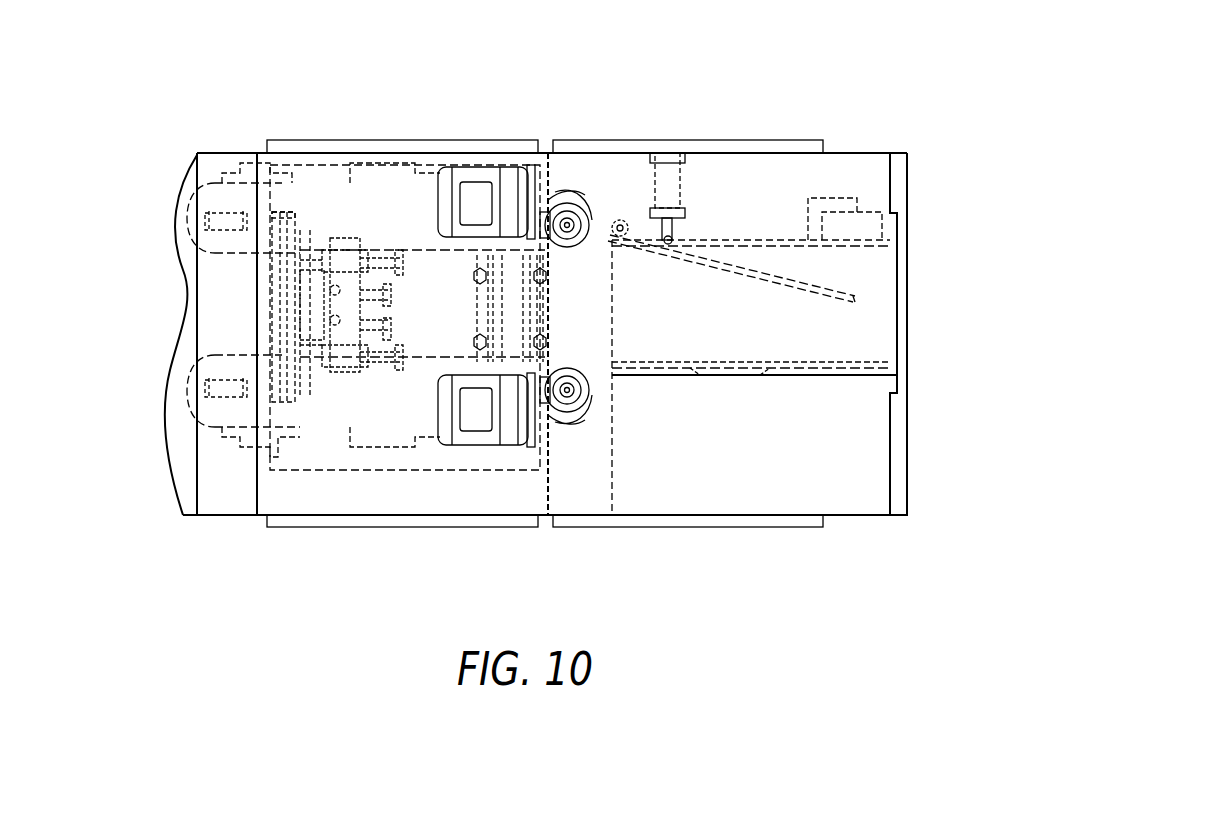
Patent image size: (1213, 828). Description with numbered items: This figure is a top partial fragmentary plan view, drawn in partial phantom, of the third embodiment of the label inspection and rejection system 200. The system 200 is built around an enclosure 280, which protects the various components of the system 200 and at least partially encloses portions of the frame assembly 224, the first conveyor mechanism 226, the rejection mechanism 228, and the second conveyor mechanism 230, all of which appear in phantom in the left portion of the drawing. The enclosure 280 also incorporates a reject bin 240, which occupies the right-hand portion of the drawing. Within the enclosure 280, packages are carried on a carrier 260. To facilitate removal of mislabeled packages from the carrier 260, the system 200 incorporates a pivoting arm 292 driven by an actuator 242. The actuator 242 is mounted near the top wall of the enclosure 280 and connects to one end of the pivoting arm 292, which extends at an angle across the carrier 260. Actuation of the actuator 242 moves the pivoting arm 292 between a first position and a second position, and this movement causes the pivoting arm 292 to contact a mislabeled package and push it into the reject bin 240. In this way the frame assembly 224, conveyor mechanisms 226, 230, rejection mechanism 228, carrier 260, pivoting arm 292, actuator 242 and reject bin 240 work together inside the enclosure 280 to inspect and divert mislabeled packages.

The label inspection and rejection system 200 is at (967, 437).
The frame assembly 224 is at (287, 207).
The first conveyor mechanism 226 is at (208, 440).
The rejection mechanism 228 is at (648, 165).
The second conveyor mechanism 230 is at (825, 318).
The reject bin 240 is at (845, 477).
The actuator 242 is at (678, 197).
The carrier 260 is at (862, 272).
The enclosure 280 is at (727, 492).
The pivoting arm 292 is at (815, 290).